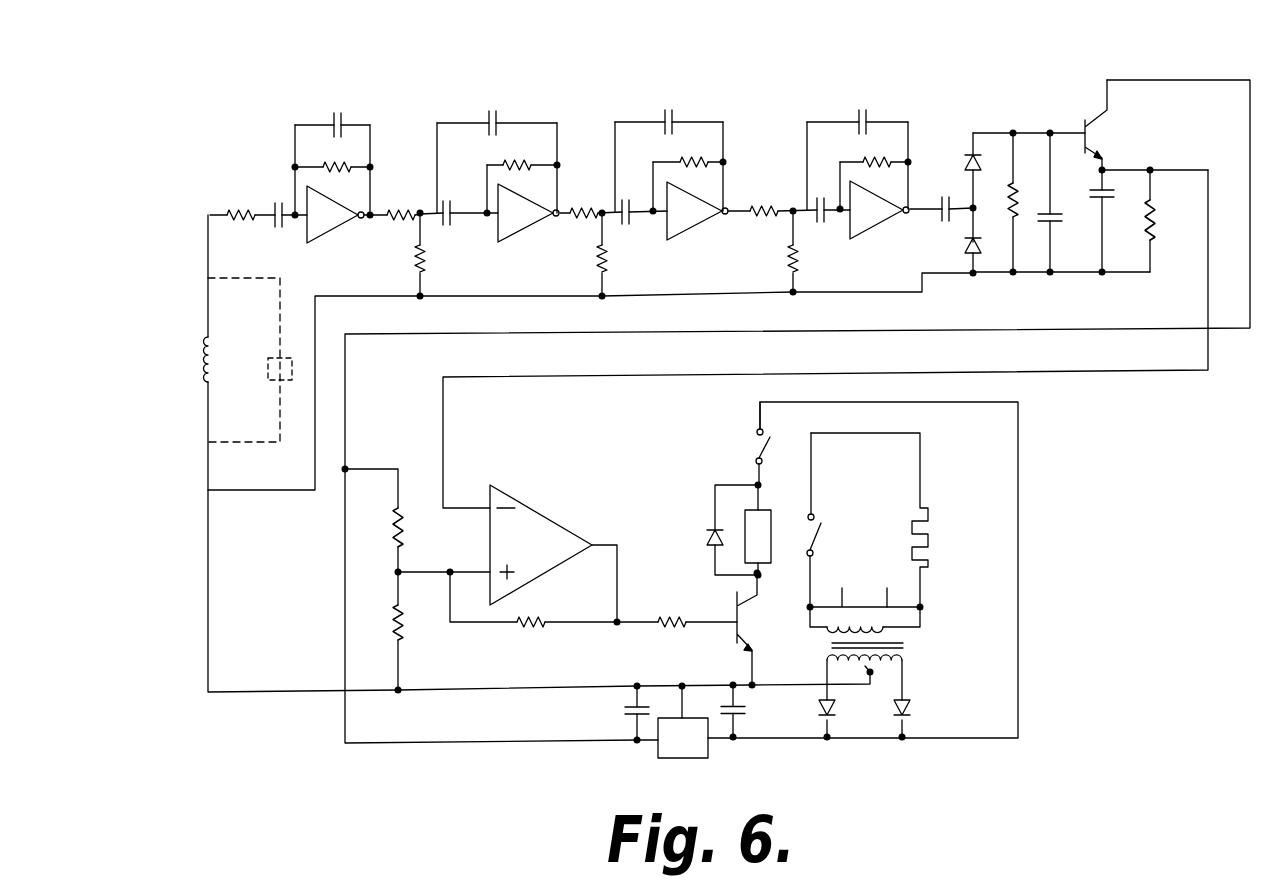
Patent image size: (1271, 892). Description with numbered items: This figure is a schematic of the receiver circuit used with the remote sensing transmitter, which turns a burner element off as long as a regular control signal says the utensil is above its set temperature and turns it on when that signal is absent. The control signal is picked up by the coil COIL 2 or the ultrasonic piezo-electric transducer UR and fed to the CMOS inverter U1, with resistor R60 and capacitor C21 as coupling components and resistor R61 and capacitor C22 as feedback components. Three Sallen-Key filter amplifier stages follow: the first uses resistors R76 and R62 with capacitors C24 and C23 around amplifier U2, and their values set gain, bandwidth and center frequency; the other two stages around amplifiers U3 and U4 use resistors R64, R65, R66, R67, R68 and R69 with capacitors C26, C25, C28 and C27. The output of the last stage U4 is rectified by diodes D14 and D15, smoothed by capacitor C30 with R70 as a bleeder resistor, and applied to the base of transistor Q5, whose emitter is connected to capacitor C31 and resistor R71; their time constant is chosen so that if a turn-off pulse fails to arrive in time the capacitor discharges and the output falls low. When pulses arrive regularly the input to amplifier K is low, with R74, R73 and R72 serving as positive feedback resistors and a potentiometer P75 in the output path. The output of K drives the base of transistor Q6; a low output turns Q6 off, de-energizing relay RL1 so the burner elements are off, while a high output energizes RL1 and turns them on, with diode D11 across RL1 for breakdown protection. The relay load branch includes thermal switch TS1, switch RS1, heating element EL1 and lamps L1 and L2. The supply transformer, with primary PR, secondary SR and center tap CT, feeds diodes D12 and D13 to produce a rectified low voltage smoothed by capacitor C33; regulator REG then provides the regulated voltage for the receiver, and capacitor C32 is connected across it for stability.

The resistor R60 is at (240, 212).
The capacitor C21 is at (280, 228).
The capacitor C22 is at (337, 112).
The resistor R61 is at (325, 163).
The CMOS inverter U1 is at (333, 184).
The resistor R76 is at (397, 210).
The capacitor C23 is at (450, 228).
The capacitor C24 is at (493, 110).
The resistor R62 is at (512, 163).
The Sallen-Key filter amplifier U2 is at (499, 182).
The resistor R64 is at (588, 208).
The resistor R65 is at (598, 257).
The capacitor C25 is at (629, 228).
The capacitor C26 is at (681, 106).
The resistor R66 is at (683, 161).
The Sallen-Key filter amplifier U3 is at (671, 181).
The resistor R67 is at (762, 206).
The resistor R68 is at (790, 256).
The capacitor C27 is at (824, 228).
The capacitor C28 is at (876, 97).
The resistor R69 is at (866, 160).
The inverter U4 is at (859, 180).
The rectifying diode D14 is at (968, 152).
The rectifying diode D15 is at (964, 258).
The bleeder resistor R70 is at (1010, 180).
The capacitor C30 is at (1053, 222).
The transistor Q5 is at (1083, 120).
The capacitor C31 is at (1090, 191).
The resistor R71 is at (1152, 215).
The coil COIL 2 is at (205, 365).
The ultrasonic piezo-electric transducer UR is at (268, 381).
The positive feedback resistor R72 is at (396, 530).
The positive feedback resistor R73 is at (397, 622).
The amplifier K is at (509, 555).
The positive feedback resistor R74 is at (540, 628).
The potentiometer P75 is at (668, 618).
The diode D11 is at (707, 537).
The transistor Q6 is at (737, 600).
The thermal switch TS1 is at (757, 460).
The relay RL1 is at (765, 527).
The reed switch RS1 is at (815, 537).
The heating element EL1 is at (929, 535).
The lamp L1 is at (848, 584).
The lamp L2 is at (893, 584).
The primary winding PR is at (885, 628).
The secondary winding SR is at (905, 659).
The center tap CT is at (845, 671).
The diode D12 is at (835, 712).
The diode D13 is at (906, 711).
The capacitor C32 is at (625, 712).
The regulator REG is at (660, 756).
The capacitor C33 is at (742, 712).